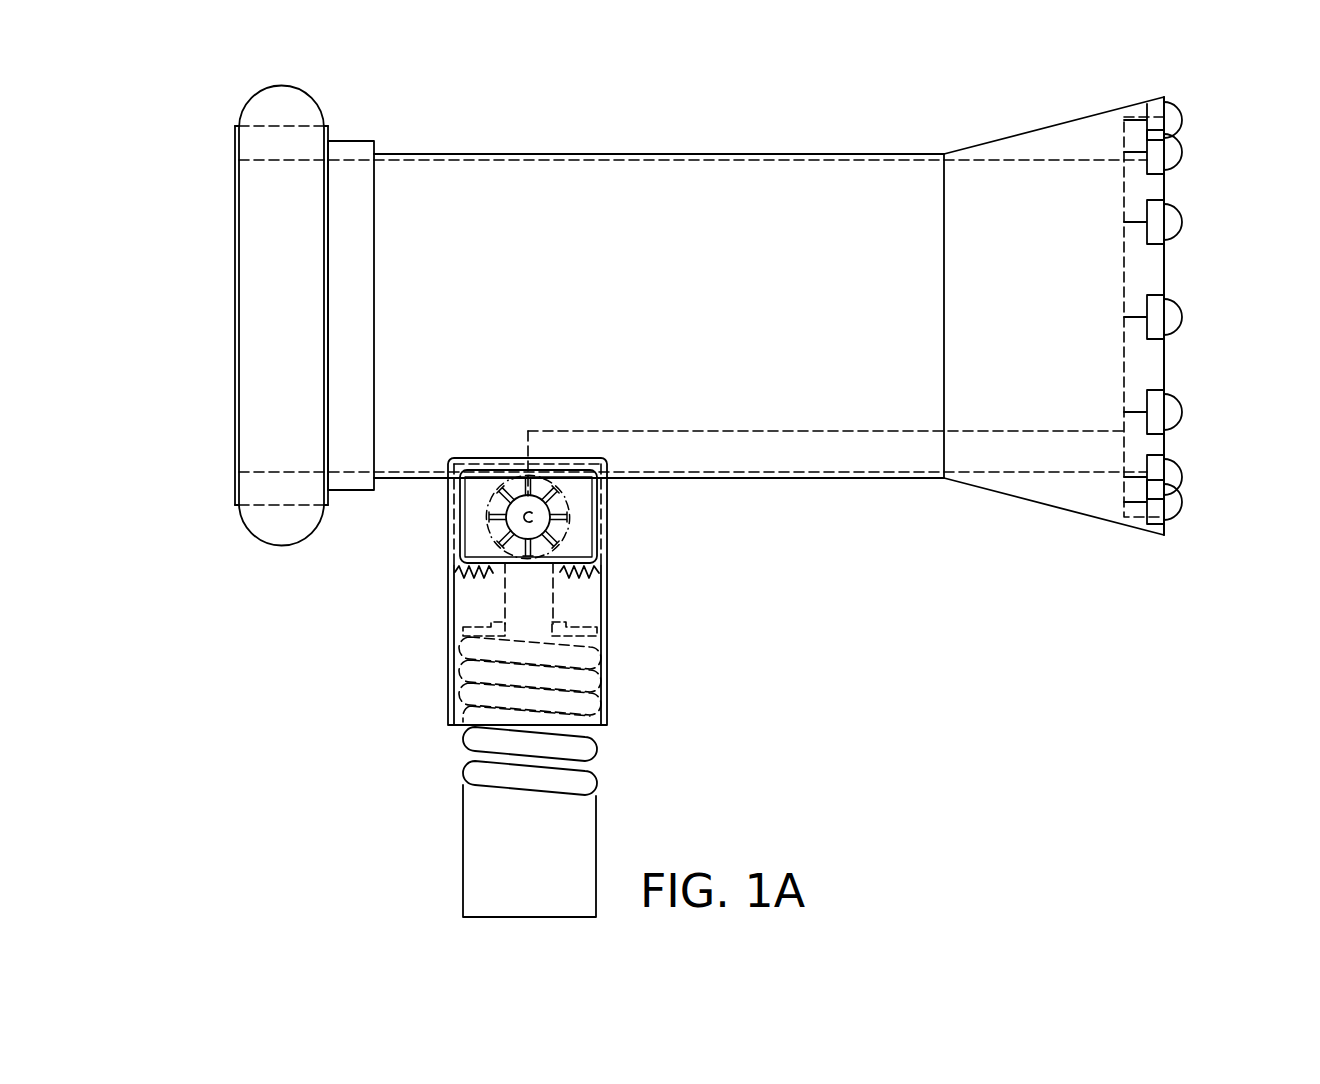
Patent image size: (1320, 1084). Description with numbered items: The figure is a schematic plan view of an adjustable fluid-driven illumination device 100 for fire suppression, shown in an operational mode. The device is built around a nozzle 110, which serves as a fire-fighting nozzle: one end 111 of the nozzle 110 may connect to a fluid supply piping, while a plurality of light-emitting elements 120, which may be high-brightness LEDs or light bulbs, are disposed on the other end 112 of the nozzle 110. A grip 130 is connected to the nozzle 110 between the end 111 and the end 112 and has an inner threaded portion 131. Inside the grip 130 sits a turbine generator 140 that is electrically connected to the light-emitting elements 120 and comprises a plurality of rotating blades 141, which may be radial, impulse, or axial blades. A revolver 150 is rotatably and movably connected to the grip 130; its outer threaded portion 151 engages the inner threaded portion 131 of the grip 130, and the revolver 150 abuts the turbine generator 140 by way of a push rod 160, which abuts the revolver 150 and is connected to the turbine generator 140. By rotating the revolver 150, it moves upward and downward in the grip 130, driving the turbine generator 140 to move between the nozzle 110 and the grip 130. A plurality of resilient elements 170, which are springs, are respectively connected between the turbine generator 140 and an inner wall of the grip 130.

The adjustable fluid-driven illumination device 100 is at (176, 113).
The nozzle 110 is at (660, 152).
The end of the nozzle 111 is at (236, 316).
The other end of the nozzle 112 is at (1168, 367).
The light-emitting elements 120 is at (1185, 411).
The grip 130 is at (448, 688).
The inner threaded portion 131 is at (603, 617).
The turbine generator 140 is at (597, 548).
The rotating blades 141 is at (573, 521).
The revolver 150 is at (462, 849).
The outer threaded portion 151 is at (603, 748).
The push rod 160 is at (528, 611).
The resilient elements 170 is at (557, 573).